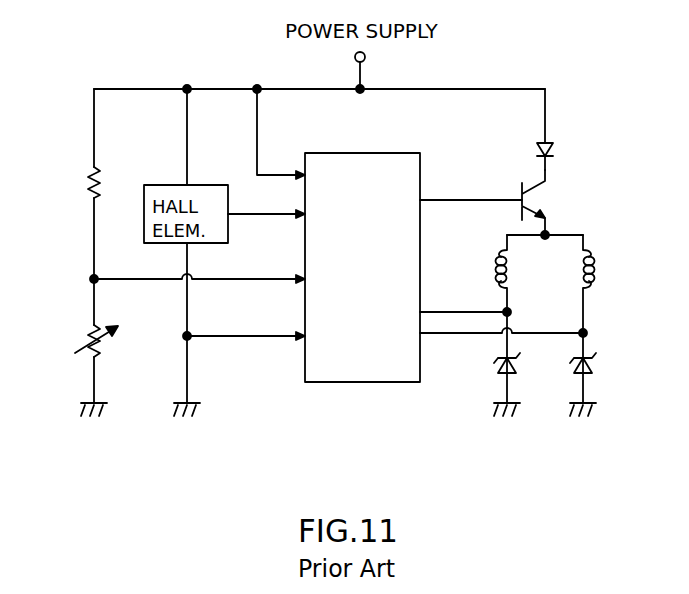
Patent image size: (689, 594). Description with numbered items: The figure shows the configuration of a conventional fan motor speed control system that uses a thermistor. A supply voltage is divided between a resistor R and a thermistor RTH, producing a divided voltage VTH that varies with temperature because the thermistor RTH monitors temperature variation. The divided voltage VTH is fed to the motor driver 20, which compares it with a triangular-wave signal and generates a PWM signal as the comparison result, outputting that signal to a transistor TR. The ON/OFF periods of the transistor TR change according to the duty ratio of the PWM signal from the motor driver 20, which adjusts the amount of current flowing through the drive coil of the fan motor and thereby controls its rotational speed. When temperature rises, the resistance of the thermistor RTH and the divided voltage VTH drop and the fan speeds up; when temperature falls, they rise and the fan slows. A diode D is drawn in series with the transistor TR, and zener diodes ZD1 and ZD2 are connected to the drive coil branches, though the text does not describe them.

The motor driver 20 is at (390, 153).
The resistor R is at (81, 182).
The thermistor RTH is at (74, 341).
The divided voltage VTH is at (199, 272).
The diode D is at (553, 129).
The transistor TR is at (546, 202).
The zener diode ZD1 is at (525, 365).
The zener diode ZD2 is at (601, 365).